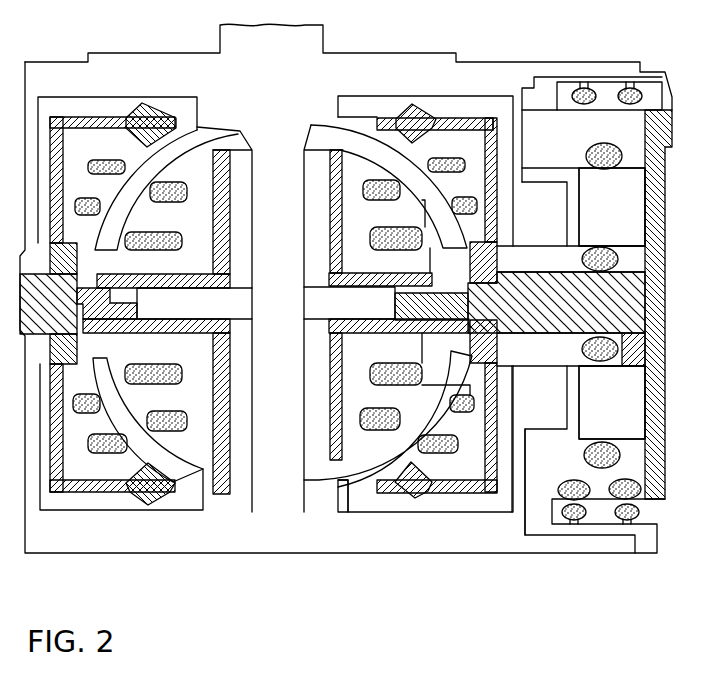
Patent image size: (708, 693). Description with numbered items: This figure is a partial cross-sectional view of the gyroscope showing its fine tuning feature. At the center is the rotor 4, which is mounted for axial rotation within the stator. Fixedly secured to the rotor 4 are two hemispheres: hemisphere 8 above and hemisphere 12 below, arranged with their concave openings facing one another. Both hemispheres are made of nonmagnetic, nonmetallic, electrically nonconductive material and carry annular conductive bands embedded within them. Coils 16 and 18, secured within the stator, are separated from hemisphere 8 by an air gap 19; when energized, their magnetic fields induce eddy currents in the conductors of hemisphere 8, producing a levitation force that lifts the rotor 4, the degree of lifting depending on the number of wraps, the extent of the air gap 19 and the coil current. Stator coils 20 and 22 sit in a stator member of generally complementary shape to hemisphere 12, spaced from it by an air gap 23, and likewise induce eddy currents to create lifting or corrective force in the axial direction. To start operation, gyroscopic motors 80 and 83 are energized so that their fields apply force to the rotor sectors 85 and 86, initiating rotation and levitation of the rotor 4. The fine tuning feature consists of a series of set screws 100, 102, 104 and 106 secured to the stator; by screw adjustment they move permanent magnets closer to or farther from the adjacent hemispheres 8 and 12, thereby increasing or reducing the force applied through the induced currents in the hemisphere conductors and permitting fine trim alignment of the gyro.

The rotor 4 is at (286, 314).
The hemisphere 8 is at (372, 148).
The hemisphere 12 is at (348, 482).
The coil 16 is at (443, 160).
The coil 18 is at (476, 190).
The air gap 19 is at (415, 150).
The stator coil 20 is at (473, 388).
The stator coil 22 is at (443, 453).
The air gap 23 is at (427, 427).
The gyroscopic motor 80 is at (627, 414).
The gyroscopic motor 83 is at (628, 221).
The rotor sector 85 is at (557, 221).
The rotor sector 86 is at (557, 420).
The set screw 100 is at (428, 118).
The set screw 102 is at (413, 495).
The set screw 104 is at (150, 495).
The set screw 106 is at (147, 122).